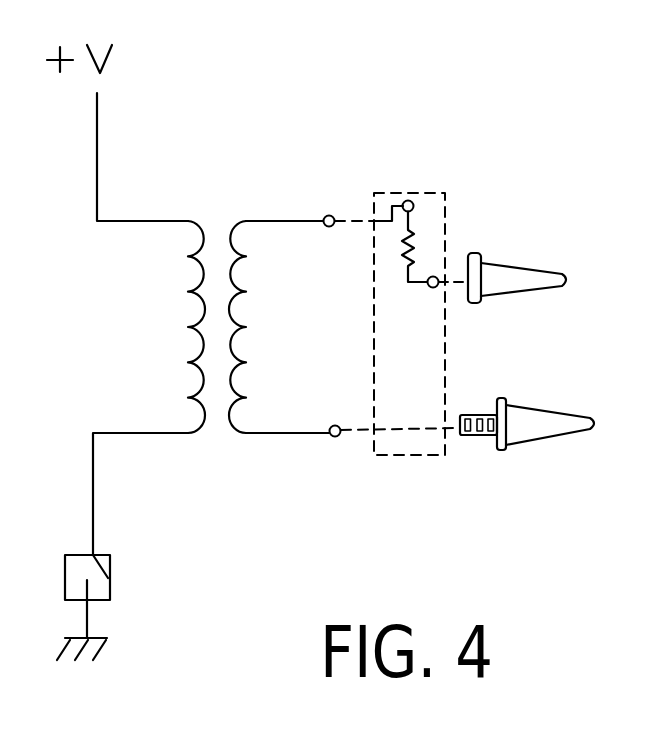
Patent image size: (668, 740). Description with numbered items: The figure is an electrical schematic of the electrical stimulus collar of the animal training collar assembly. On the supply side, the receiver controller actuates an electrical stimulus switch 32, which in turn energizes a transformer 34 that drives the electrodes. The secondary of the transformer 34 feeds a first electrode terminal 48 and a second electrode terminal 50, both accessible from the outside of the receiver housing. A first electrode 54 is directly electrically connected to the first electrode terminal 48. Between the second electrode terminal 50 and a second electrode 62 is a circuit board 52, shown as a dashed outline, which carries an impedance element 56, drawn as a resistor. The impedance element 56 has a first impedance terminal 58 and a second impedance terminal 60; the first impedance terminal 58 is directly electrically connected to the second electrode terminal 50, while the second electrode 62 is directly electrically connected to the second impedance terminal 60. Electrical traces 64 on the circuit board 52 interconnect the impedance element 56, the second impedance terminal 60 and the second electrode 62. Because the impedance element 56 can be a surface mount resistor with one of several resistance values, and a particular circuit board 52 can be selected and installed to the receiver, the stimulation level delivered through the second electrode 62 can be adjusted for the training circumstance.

The electrical stimulus switch 32 is at (110, 568).
The transformer 34 is at (220, 170).
The first electrode terminal 48 is at (337, 437).
The second electrode terminal 50 is at (325, 215).
The circuit board 52 is at (406, 458).
The first electrode 54 is at (530, 428).
The impedance element 56 is at (412, 232).
The first impedance terminal 58 is at (412, 201).
The second impedance terminal 60 is at (438, 288).
The second electrode 62 is at (540, 268).
The electrical traces 64 is at (394, 204).